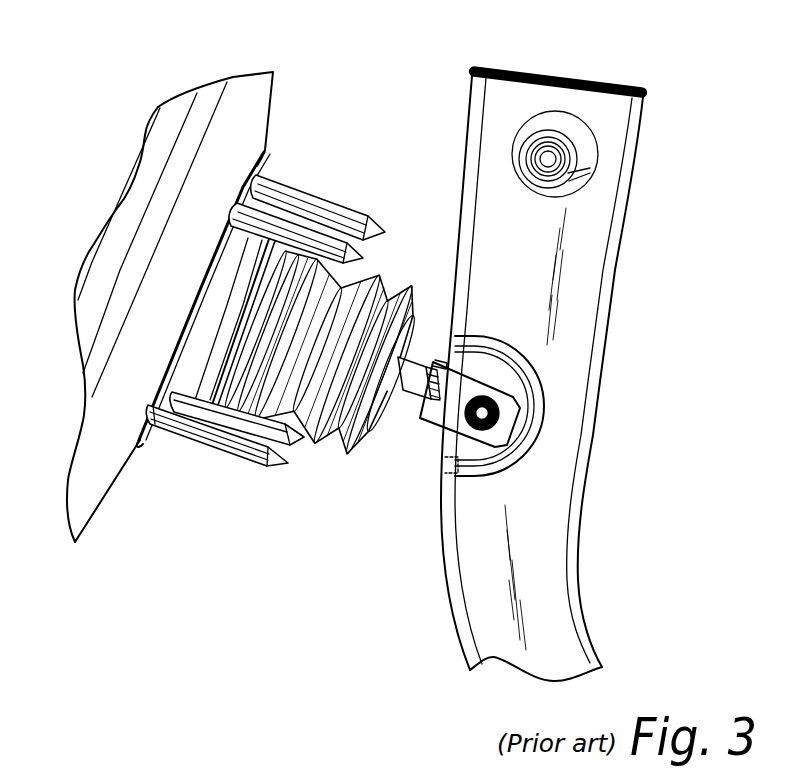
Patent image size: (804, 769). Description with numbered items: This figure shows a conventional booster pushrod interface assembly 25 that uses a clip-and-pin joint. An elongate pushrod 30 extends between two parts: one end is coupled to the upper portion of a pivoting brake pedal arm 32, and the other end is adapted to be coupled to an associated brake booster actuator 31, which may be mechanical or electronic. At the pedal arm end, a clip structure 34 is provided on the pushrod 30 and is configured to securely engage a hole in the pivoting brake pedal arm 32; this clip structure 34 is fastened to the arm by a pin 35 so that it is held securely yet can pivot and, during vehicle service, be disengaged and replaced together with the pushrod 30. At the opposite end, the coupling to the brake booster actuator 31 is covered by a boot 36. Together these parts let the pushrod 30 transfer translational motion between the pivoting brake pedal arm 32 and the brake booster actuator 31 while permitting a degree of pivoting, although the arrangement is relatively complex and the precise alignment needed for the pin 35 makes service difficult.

The booster pushrod interface assembly 25 is at (492, 334).
The pushrod 30 is at (407, 405).
The brake booster actuator 31 is at (232, 110).
The pivoting brake pedal arm 32 is at (592, 238).
The clip structure 34 is at (477, 445).
The pin 35 is at (495, 394).
The boot 36 is at (321, 440).